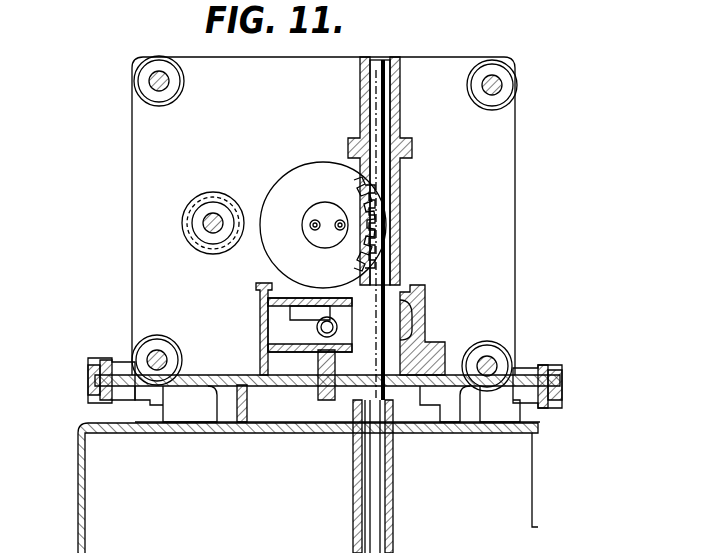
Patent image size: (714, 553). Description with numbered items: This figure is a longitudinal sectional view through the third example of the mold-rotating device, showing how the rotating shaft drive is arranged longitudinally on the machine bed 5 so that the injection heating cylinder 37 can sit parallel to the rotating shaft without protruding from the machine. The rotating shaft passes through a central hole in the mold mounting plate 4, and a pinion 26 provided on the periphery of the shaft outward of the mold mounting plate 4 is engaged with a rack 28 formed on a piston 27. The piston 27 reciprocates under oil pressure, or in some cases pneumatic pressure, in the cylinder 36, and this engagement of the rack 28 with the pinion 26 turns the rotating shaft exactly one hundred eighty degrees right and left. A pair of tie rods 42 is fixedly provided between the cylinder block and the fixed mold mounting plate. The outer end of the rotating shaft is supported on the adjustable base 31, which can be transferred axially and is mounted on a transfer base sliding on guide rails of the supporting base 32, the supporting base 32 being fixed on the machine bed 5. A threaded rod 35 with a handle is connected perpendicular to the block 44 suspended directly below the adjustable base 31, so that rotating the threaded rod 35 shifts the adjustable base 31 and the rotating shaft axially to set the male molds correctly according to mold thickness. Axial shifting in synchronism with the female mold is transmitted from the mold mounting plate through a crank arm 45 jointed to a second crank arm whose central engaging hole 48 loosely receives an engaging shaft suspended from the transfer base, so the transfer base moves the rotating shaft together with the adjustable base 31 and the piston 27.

The mold mounting plate 4 is at (500, 240).
The machine bed 5 is at (78, 495).
The pinion 26 is at (368, 213).
The piston 27 is at (380, 290).
The rack 28 is at (386, 108).
The adjustable base 31 is at (262, 284).
The supporting base 32 is at (246, 360).
The threaded rod 35 is at (317, 327).
The cylinder 36 is at (395, 497).
The injection heating cylinder 37 is at (210, 198).
The tie rod 42 is at (157, 81).
The block 44 is at (318, 312).
The crank arm 45 is at (560, 376).
The engaging hole 48 is at (322, 402).